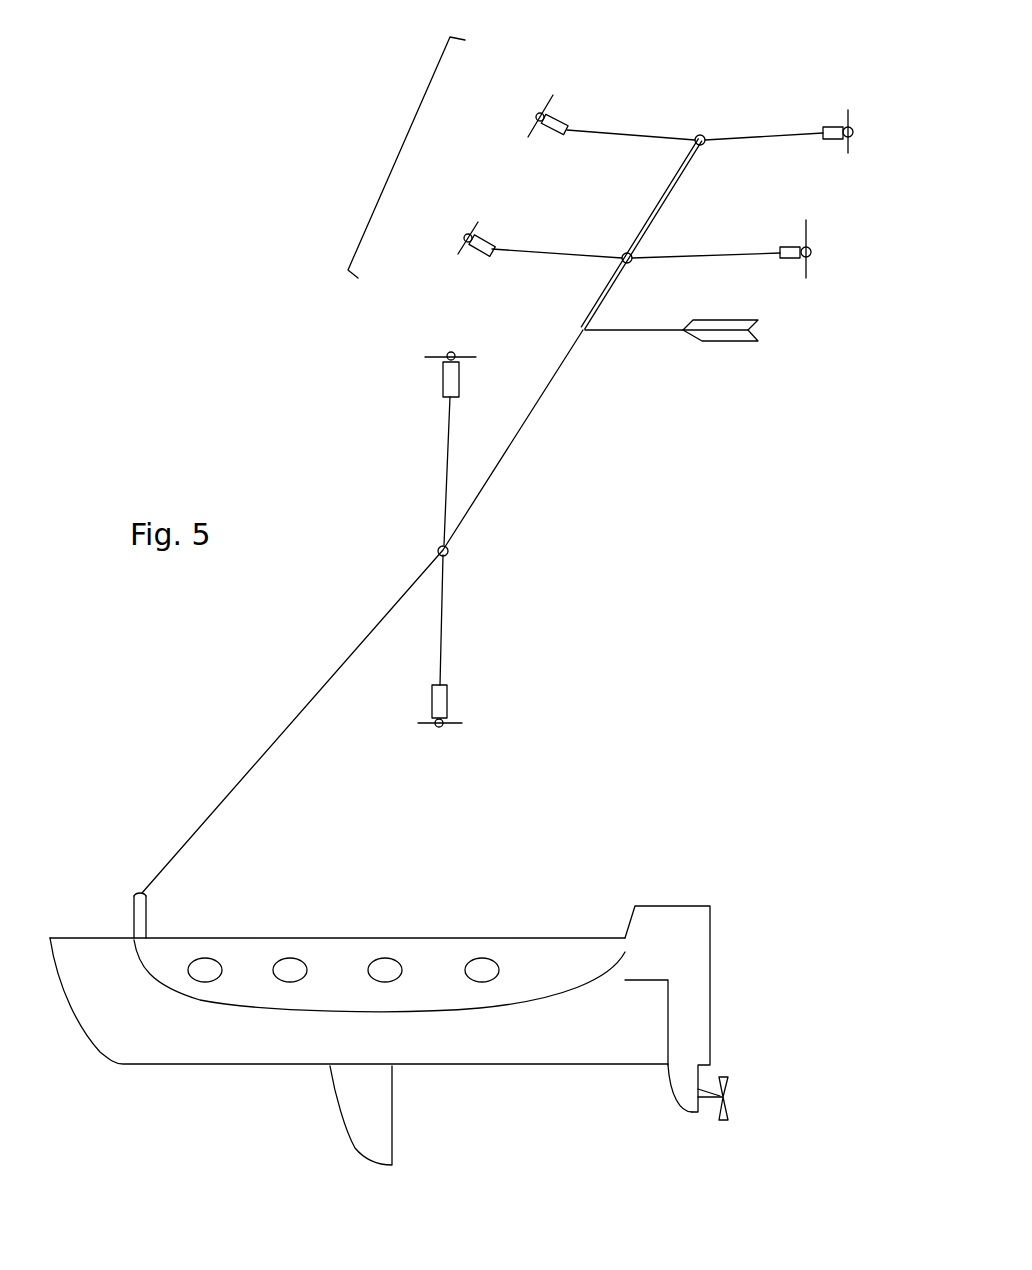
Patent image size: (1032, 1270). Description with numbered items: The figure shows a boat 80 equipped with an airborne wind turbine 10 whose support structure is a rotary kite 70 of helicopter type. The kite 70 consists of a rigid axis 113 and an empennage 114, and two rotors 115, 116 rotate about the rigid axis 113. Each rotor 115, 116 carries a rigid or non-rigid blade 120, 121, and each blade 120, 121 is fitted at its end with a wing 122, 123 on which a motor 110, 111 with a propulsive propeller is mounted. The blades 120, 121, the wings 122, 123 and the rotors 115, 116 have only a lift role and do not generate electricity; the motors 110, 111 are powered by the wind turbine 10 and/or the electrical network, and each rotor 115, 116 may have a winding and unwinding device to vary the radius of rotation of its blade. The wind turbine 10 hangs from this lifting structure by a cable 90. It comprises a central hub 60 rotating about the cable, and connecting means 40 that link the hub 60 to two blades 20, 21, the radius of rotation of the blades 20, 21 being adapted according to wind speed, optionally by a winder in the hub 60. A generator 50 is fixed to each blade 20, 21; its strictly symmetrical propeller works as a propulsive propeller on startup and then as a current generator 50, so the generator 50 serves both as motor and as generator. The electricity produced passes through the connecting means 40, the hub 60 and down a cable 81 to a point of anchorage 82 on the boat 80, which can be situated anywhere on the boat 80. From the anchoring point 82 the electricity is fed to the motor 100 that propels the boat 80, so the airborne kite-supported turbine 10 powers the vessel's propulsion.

The wind turbine 10 is at (657, 696).
The blade 20 is at (443, 386).
The blade 21 is at (447, 700).
The connecting means 40 is at (448, 465).
The generator 50 is at (448, 354).
The hub 60 is at (448, 556).
The rotary kite 70 is at (398, 156).
The boat 80 is at (410, 937).
The cable 81 is at (243, 780).
The point of anchorage 82 is at (134, 895).
The cable 90 is at (533, 410).
The motor 100 is at (710, 937).
The motor 110 is at (507, 153).
The motor 111 is at (841, 174).
The rigid axis 113 is at (590, 308).
The empennage 114 is at (703, 342).
The rotor 115 is at (624, 254).
The rotor 116 is at (699, 135).
The blade 120 is at (628, 134).
The blade 121 is at (770, 136).
The wing 122 is at (568, 118).
The wing 123 is at (826, 126).